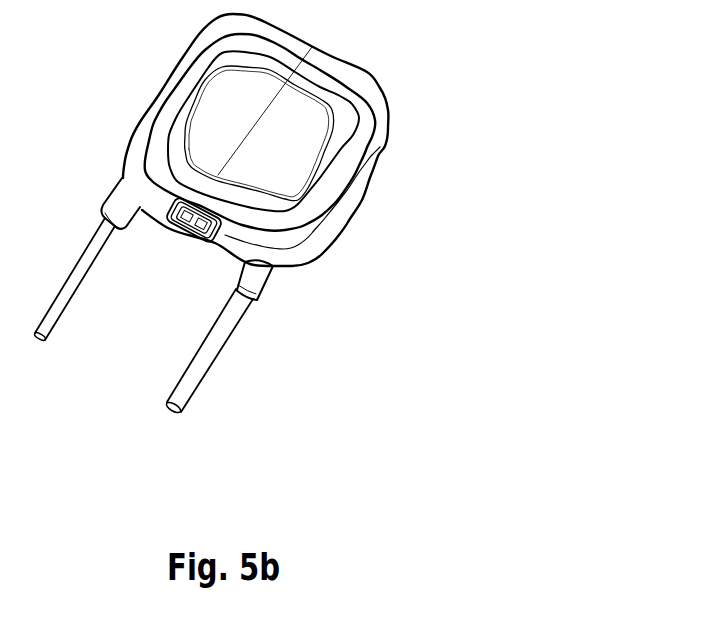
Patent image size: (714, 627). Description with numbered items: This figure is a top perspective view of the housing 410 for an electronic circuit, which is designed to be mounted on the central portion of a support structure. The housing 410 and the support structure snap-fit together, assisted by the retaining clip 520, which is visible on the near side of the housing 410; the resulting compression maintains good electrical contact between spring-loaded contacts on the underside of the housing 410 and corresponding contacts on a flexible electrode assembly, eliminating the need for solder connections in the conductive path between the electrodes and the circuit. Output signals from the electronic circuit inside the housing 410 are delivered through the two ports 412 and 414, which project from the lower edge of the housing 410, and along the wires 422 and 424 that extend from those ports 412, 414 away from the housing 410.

The housing 410 is at (300, 112).
The port 412 is at (113, 197).
The port 414 is at (247, 280).
The wire 422 is at (47, 334).
The wire 424 is at (178, 412).
The retaining clip 520 is at (197, 240).